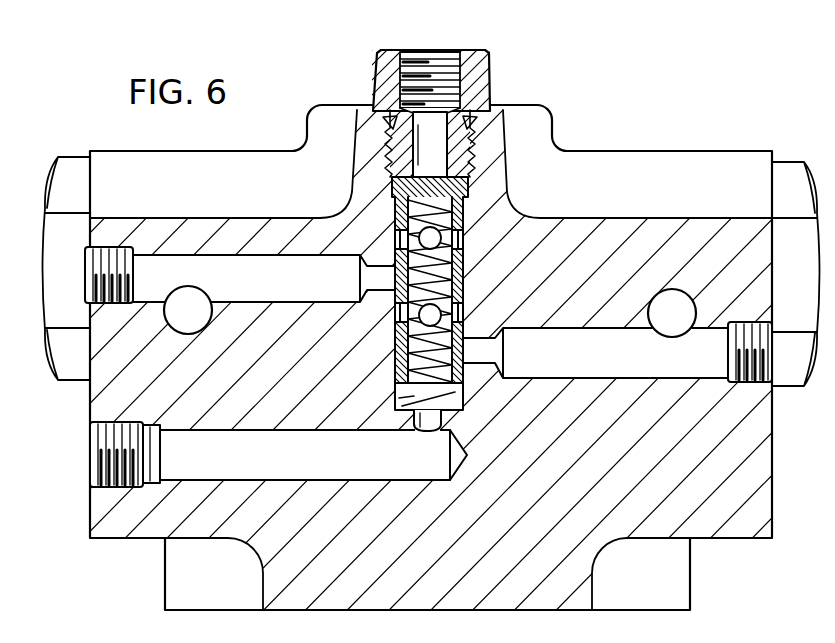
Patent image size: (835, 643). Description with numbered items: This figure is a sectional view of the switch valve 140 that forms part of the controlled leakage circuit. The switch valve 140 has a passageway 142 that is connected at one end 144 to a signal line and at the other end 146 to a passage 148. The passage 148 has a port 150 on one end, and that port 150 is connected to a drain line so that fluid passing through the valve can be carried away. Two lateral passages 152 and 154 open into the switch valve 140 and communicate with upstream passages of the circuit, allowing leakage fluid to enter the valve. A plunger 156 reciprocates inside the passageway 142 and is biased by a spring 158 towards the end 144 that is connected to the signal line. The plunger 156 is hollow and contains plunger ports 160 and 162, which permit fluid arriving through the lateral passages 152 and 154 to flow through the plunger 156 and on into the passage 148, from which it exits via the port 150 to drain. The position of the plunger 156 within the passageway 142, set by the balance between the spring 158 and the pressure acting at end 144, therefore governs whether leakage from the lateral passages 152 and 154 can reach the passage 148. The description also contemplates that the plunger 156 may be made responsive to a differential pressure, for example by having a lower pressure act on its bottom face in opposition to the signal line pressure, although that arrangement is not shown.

The switch valve 140 is at (606, 134).
The passageway 142 is at (463, 277).
The end 144 is at (443, 58).
The other end 146 is at (388, 403).
The passage 148 is at (197, 467).
The port 150 is at (92, 463).
The lateral passage 152 is at (705, 372).
The lateral passage 154 is at (178, 255).
The plunger 156 is at (395, 372).
The spring 158 is at (452, 402).
The plunger port 160 is at (497, 213).
The plunger port 162 is at (441, 320).